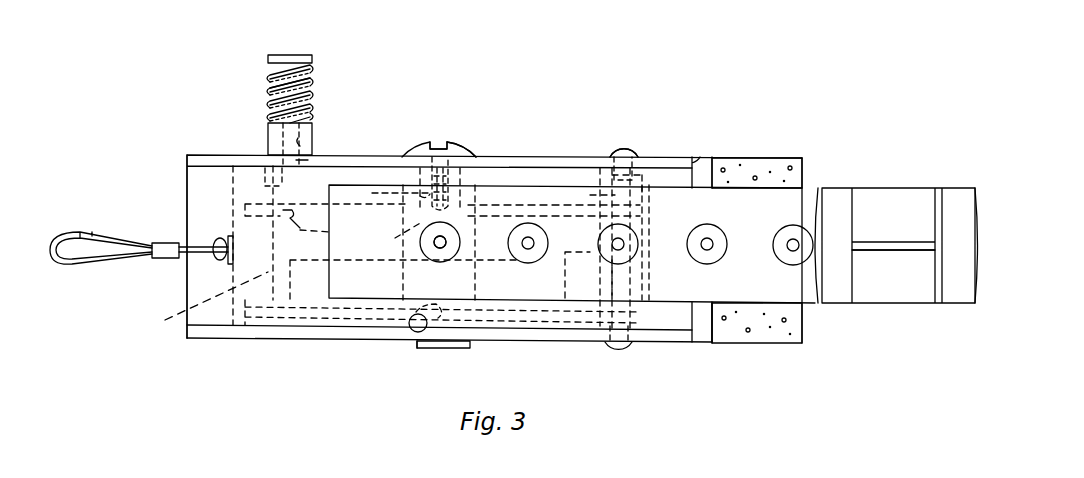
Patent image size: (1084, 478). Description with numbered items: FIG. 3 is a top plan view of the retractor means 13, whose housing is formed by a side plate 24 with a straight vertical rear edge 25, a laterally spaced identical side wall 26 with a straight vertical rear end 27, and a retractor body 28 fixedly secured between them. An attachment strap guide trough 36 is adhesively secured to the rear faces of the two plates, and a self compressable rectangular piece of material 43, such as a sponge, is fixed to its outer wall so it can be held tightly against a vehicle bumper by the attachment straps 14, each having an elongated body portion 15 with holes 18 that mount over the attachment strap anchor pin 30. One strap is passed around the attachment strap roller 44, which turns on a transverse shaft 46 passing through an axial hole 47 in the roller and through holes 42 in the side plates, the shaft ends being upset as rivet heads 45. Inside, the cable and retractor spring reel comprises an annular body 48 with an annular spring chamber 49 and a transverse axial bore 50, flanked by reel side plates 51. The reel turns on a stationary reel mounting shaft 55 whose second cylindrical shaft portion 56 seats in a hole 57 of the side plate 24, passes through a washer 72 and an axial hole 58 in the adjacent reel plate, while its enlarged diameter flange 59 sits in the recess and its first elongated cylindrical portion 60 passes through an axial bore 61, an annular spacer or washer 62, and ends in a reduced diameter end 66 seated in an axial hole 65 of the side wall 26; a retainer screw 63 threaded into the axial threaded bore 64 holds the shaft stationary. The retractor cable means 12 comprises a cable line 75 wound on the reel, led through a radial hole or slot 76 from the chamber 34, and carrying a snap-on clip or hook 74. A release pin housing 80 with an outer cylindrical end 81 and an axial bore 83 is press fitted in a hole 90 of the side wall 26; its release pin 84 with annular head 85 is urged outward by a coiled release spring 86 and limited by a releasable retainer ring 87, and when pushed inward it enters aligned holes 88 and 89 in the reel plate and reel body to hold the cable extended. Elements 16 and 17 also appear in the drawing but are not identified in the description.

The retractor cable means 12 is at (162, 240).
The retractor means 13 is at (740, 150).
The attachment strap 14 is at (822, 185).
The elongated body portion 15 is at (775, 318).
The cross bar 16 is at (896, 292).
The support rail 17 is at (956, 192).
The holes 18 is at (444, 258).
The side plate 24 is at (205, 339).
The straight vertical rear edge 25 is at (704, 342).
The side wall 26 is at (188, 155).
The straight vertical rear end 27 is at (702, 157).
The retractor body 28 is at (198, 172).
The attachment strap anchor pin 30 is at (446, 241).
The chamber 34 is at (245, 155).
The attachment strap guide trough 36 is at (720, 343).
The holes 42 is at (636, 158).
The self compressable rectangular piece of material 43 is at (790, 155).
The attachment strap roller 44 is at (612, 160).
The rivet head 45 is at (622, 152).
The transverse shaft 46 is at (640, 196).
The axial hole 47 is at (632, 270).
The annular body 48 is at (268, 272).
The annular spring chamber 49 is at (270, 322).
The transverse axial bore 50 is at (490, 216).
The reel side plates 51 is at (326, 157).
The reel mounting shaft 55 is at (432, 350).
The second cylindrical shaft portion 56 is at (455, 337).
The hole 57 is at (395, 328).
The axial hole 58 is at (505, 283).
The enlarged diameter flange 59 is at (404, 281).
The first elongated cylindrical portion 60 is at (490, 195).
The axial bore 61 is at (425, 228).
The annular spacer or washer 62 is at (402, 157).
The retainer screw 63 is at (462, 146).
The axial threaded bore 64 is at (391, 192).
The axial hole 65 is at (434, 142).
The reduced diameter end 66 is at (460, 160).
The washer 72 is at (450, 348).
The snap-on clip or hook 74 is at (62, 232).
The cable line 75 is at (200, 258).
The radial hole or slot 76 is at (214, 242).
The release pin housing 80 is at (320, 135).
The outer cylindrical end 81 is at (272, 135).
The axial bore 83 is at (304, 135).
The release pin 84 is at (300, 70).
The annular head 85 is at (290, 55).
The coiled release spring 86 is at (300, 86).
The releasable retainer ring 87 is at (282, 176).
The hole 88 is at (284, 222).
The hole 89 is at (300, 232).
The hole 90 is at (304, 142).